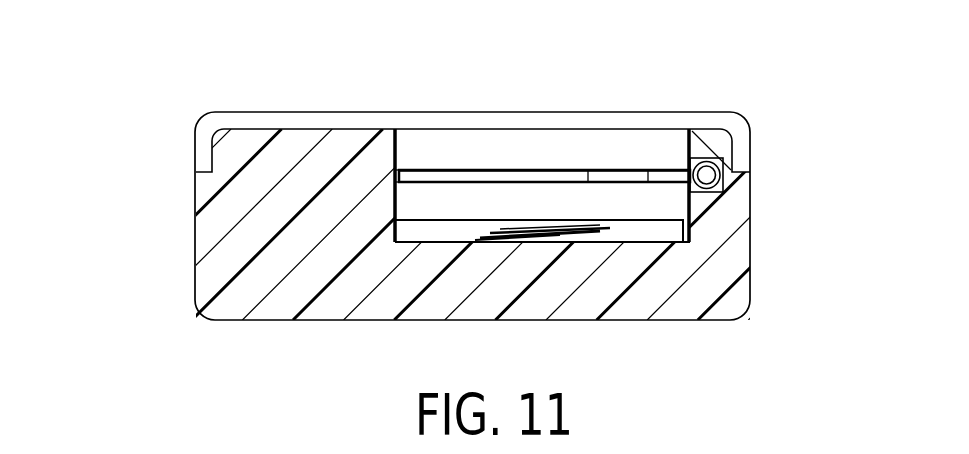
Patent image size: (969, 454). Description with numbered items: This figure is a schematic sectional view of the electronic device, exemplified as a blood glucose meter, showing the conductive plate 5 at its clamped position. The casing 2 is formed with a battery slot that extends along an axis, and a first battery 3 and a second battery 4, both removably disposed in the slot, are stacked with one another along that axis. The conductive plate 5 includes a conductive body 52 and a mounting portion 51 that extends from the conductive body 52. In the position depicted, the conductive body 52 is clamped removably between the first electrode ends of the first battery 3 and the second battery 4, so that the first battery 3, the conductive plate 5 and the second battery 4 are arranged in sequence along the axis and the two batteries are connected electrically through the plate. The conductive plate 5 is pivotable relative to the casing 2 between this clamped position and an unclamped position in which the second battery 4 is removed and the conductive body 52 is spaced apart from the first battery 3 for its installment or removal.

The casing 2 is at (192, 233).
The first battery 3 is at (634, 221).
The second battery 4 is at (536, 140).
The conductive plate 5 is at (652, 188).
The mounting portion 51 is at (722, 163).
The conductive body 52 is at (458, 172).